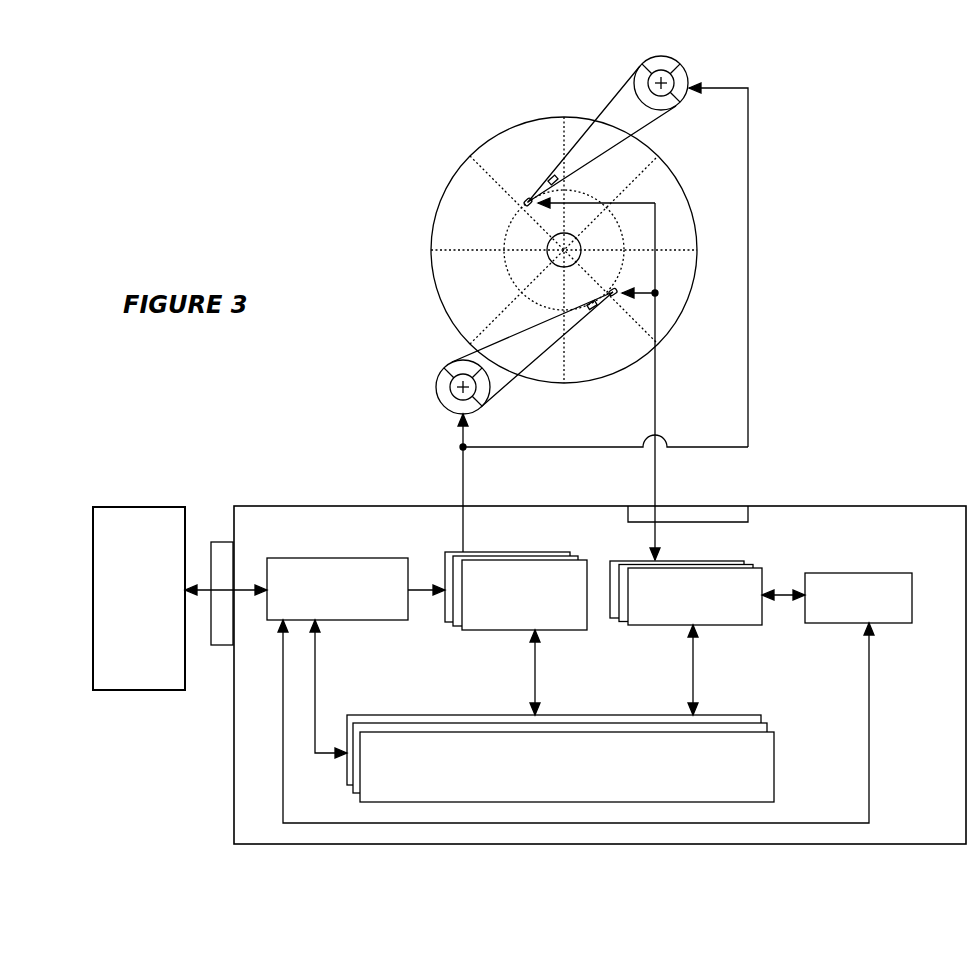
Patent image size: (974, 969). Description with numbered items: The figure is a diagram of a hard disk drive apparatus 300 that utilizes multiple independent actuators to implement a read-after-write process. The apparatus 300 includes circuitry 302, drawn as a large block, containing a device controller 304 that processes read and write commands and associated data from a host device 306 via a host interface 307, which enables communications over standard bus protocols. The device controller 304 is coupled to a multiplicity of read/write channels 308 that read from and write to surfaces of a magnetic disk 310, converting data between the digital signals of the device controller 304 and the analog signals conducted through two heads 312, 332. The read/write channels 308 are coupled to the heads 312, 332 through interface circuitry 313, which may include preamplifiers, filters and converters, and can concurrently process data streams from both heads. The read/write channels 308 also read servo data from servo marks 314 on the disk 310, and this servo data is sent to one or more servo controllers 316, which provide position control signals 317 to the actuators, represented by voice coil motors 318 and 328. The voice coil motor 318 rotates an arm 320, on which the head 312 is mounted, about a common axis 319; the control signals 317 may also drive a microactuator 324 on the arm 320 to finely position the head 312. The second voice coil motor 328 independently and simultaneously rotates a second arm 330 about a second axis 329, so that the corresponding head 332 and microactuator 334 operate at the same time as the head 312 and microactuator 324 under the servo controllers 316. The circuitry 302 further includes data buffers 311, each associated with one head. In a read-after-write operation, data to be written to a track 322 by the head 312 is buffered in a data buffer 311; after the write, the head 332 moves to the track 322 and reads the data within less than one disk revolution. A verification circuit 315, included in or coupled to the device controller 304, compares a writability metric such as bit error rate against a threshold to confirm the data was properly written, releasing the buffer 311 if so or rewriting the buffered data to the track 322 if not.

The hard disk drive apparatus 300 is at (218, 186).
The circuitry 302 is at (256, 506).
The device controller 304 is at (297, 558).
The host device 306 is at (125, 507).
The host interface 307 is at (218, 648).
The read/write channels 308 is at (774, 760).
The magnetic disk 310 is at (478, 147).
The data buffers 311 is at (648, 625).
The head 312 is at (611, 300).
The interface circuitry 313 is at (749, 514).
The servo marks 314 is at (655, 165).
The verification circuit 315 is at (868, 573).
The servo controllers 316 is at (522, 552).
The position control signals 317 is at (462, 477).
The voice coil motor 318 is at (436, 388).
The common axis 319 is at (455, 392).
The arm 320 is at (495, 354).
The track 322 is at (498, 237).
The microactuator 324 is at (588, 311).
The voice coil motor 328 is at (691, 81).
The second axis 329 is at (686, 60).
The second arm 330 is at (631, 82).
The head 332 is at (527, 196).
The microactuator 334 is at (554, 172).